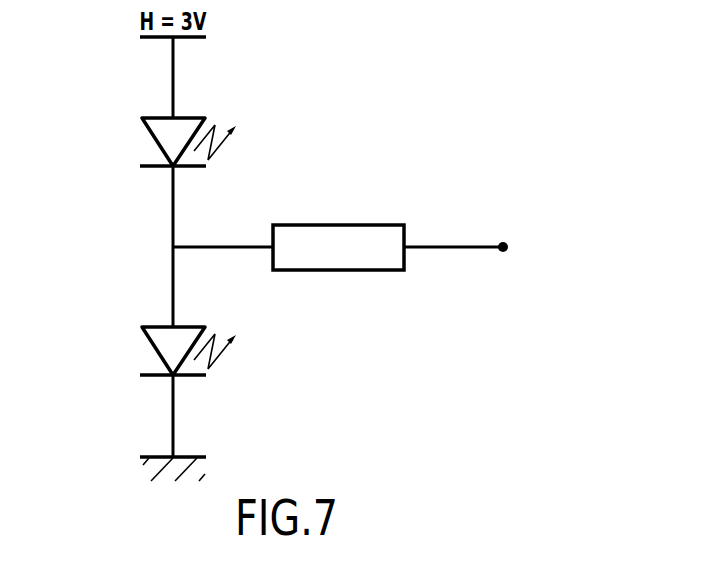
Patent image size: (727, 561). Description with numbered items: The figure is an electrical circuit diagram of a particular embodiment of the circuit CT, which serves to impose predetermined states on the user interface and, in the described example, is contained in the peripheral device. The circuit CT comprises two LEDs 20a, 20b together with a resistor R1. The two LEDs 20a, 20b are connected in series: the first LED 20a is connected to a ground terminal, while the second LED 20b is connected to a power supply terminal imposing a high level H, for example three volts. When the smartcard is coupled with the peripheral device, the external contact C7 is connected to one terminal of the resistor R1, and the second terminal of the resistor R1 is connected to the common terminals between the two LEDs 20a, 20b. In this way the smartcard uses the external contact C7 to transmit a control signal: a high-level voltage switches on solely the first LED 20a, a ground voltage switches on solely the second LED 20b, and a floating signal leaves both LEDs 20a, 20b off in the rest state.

The first LED 20a is at (162, 345).
The second LED 20b is at (162, 140).
The resistor R1 is at (335, 237).
The circuit CT is at (275, 160).
The external contact C7 is at (545, 249).